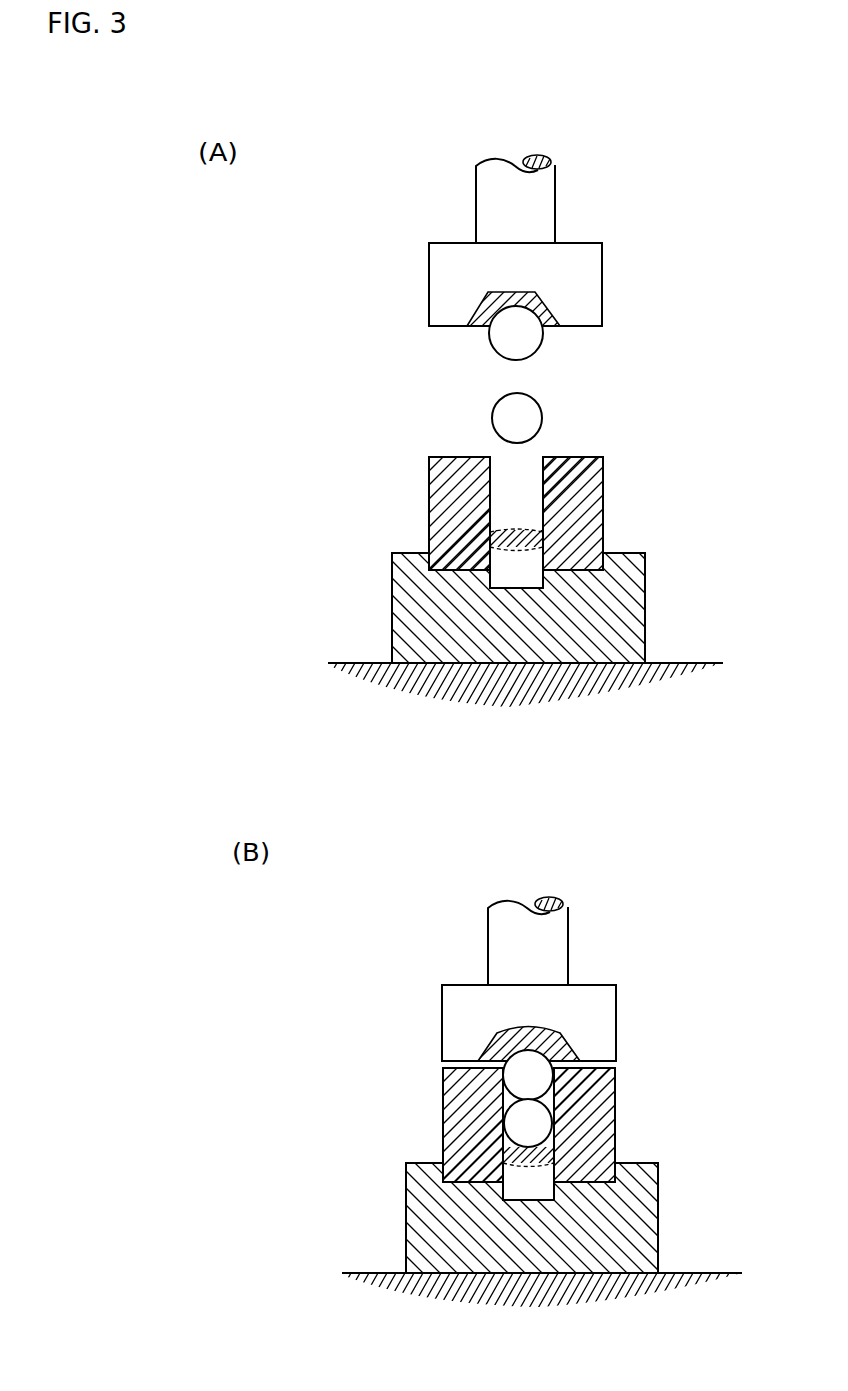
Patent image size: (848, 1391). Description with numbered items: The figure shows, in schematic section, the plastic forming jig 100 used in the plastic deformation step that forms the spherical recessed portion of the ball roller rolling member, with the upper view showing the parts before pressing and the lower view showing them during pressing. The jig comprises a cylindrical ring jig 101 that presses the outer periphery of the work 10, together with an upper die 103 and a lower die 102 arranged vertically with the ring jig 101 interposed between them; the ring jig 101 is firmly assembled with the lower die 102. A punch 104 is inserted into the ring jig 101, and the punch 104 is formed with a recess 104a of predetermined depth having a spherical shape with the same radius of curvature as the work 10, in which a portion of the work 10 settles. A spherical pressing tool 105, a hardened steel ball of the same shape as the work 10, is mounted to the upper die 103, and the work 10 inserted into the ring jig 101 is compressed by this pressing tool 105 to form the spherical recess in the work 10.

The plastic forming jig 100 is at (656, 233).
The upper die 103 is at (603, 299).
The spherical pressing tool 105 is at (541, 349).
The work 10 is at (542, 414).
The ring jig 101 is at (590, 486).
The lower die 102 is at (620, 607).
The punch 104 is at (522, 575).
The recess 104a is at (515, 533).